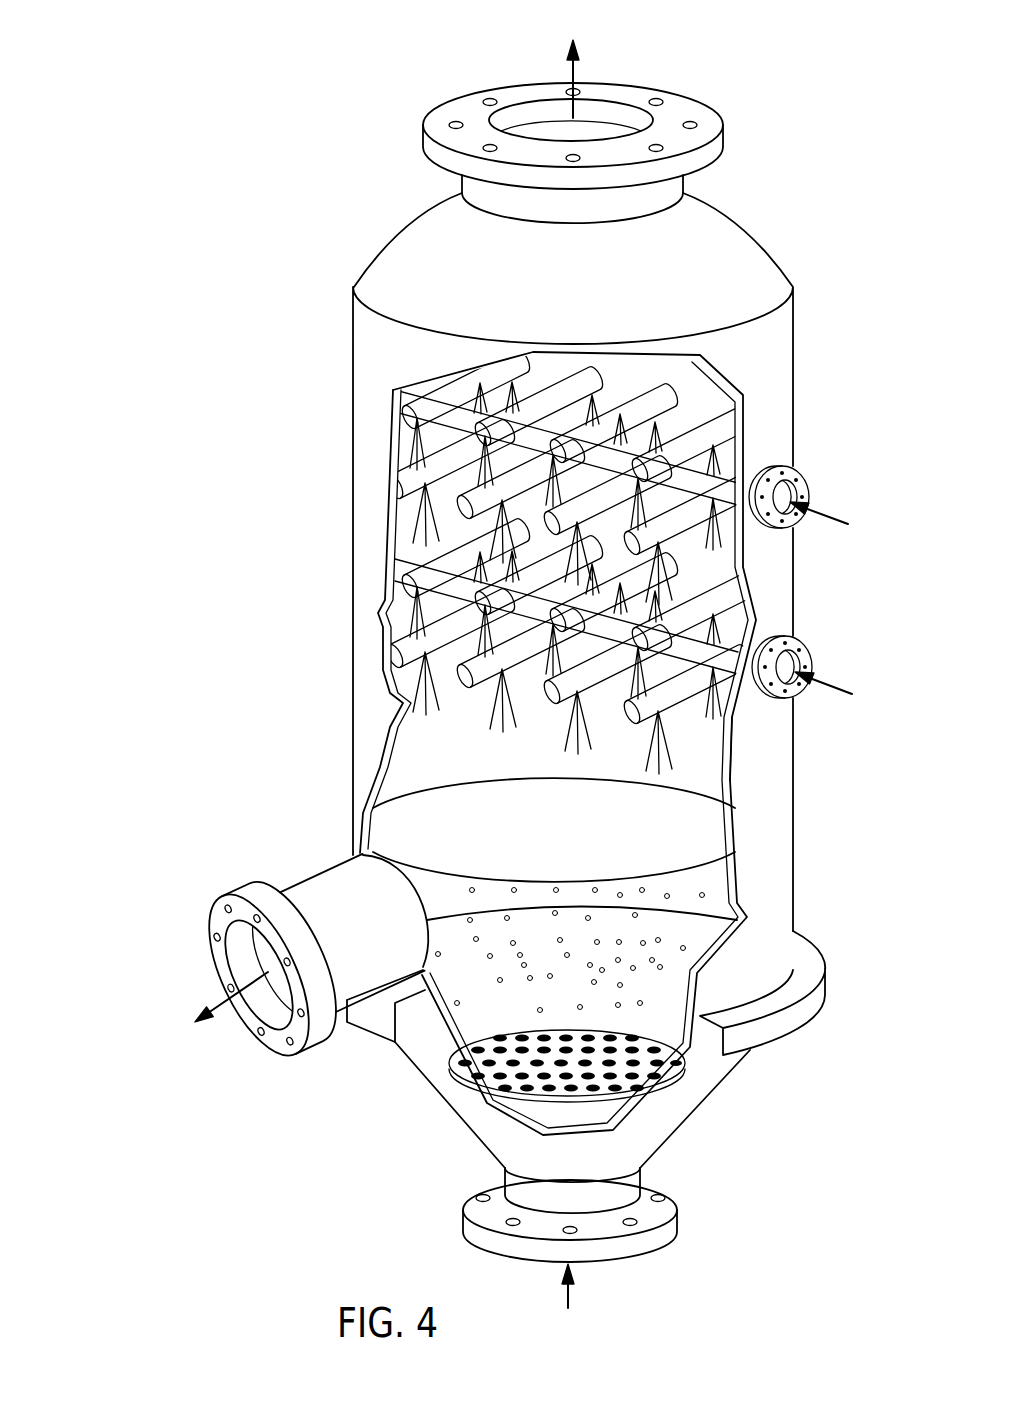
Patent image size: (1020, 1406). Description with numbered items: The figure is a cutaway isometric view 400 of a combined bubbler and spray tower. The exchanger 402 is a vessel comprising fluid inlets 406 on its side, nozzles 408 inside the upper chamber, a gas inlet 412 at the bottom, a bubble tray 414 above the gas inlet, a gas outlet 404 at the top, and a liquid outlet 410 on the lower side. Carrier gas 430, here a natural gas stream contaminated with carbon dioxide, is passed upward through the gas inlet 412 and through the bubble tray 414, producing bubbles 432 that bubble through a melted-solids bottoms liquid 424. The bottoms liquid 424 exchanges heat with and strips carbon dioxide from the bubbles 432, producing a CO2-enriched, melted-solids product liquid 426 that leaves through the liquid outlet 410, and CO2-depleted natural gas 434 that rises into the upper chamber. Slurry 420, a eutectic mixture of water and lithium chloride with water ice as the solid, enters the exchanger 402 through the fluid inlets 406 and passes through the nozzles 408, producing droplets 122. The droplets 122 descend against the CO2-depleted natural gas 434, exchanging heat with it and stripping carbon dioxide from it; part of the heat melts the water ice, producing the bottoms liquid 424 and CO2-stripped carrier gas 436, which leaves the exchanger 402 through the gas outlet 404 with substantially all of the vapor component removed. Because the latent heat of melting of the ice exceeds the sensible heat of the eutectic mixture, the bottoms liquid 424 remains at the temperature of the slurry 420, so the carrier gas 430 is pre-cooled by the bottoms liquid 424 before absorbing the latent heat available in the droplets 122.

The cutaway isometric view 400 is at (158, 56).
The exchanger 402 is at (362, 275).
The gas outlet 404 is at (690, 185).
The fluid inlets 406 is at (800, 478).
The nozzles 408 is at (420, 428).
The liquid outlet 410 is at (308, 888).
The gas inlet 412 is at (515, 1178).
The bubble tray 414 is at (630, 1097).
The droplets 122 is at (740, 745).
The slurry 420 is at (850, 608).
The bottoms liquid 424 is at (710, 847).
The product liquid 426 is at (196, 1013).
The carrier gas 430 is at (573, 1305).
The bubbles 432 is at (705, 893).
The CO2-depleted natural gas 434 is at (440, 745).
The CO2-stripped carrier gas 436 is at (574, 59).